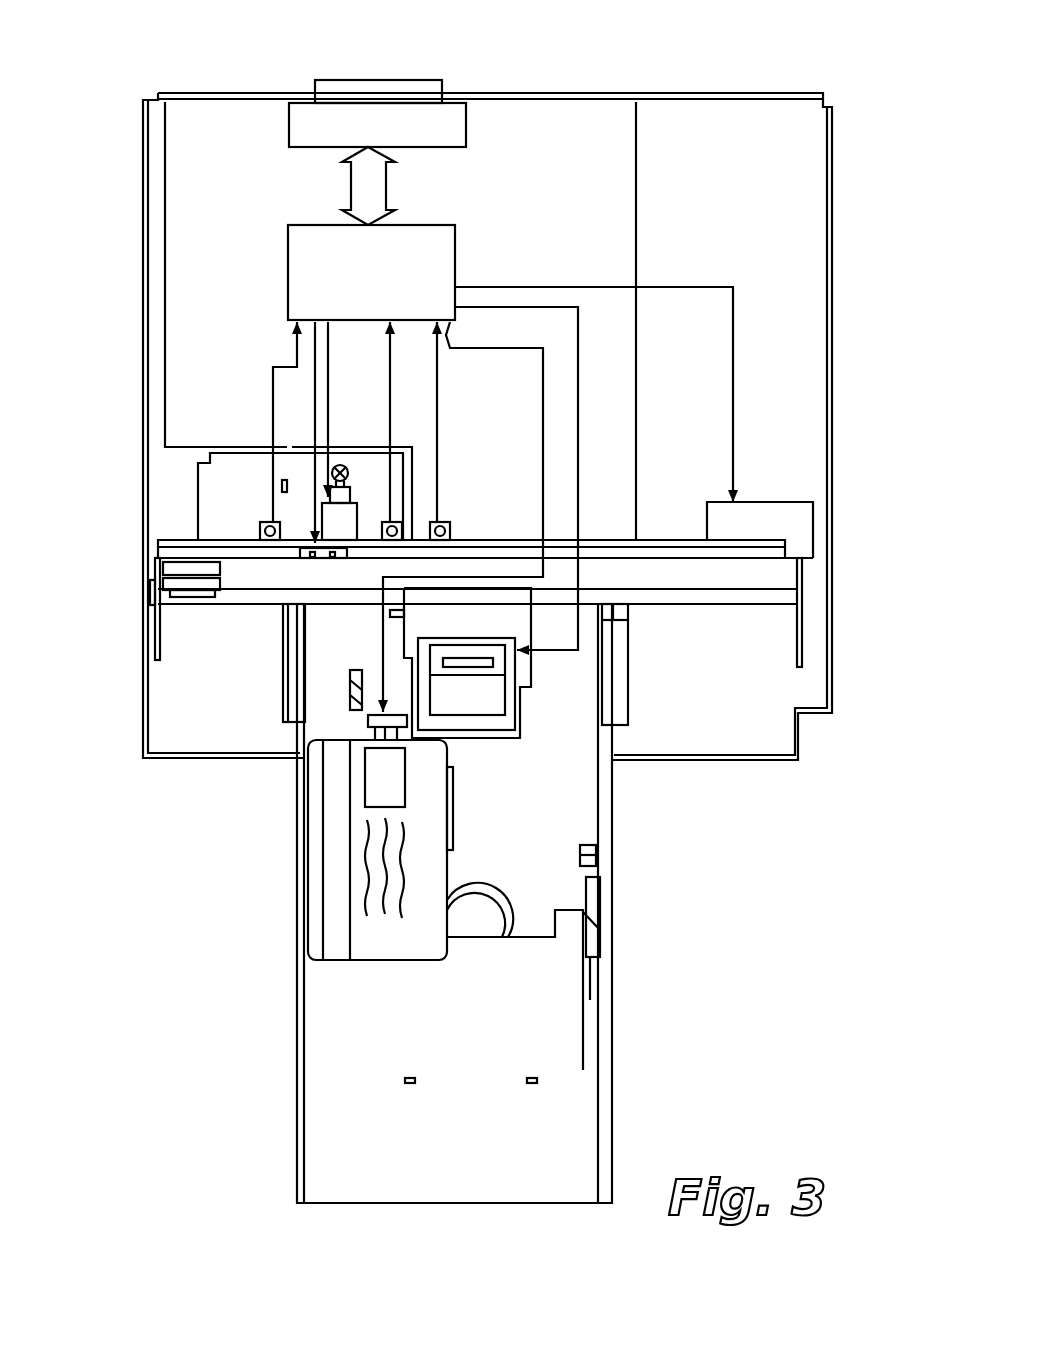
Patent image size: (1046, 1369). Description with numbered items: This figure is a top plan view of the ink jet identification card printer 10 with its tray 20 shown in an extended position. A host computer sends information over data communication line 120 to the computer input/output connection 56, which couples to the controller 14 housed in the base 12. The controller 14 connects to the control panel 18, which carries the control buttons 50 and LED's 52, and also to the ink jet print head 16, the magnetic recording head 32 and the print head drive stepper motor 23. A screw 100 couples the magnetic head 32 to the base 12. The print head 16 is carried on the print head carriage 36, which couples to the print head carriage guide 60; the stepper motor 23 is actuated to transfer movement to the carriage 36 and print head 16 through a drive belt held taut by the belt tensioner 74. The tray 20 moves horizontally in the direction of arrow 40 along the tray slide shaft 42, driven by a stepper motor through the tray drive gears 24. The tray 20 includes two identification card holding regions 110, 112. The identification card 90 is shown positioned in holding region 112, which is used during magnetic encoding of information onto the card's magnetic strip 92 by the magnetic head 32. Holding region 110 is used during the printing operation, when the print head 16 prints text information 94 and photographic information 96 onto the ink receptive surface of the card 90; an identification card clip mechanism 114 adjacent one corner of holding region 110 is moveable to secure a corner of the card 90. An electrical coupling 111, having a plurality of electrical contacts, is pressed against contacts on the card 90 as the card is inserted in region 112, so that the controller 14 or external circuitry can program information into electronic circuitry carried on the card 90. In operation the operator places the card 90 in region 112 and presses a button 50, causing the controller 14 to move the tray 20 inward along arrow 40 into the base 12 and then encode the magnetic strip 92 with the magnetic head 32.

The ink jet identification card printer 10 is at (71, 160).
The base 12 is at (833, 162).
The controller 14 is at (455, 268).
The ink jet print head 16 is at (477, 713).
The control panel 18 is at (228, 532).
The tray 20 is at (503, 903).
The print head drive stepper motor 23 is at (793, 522).
The tray drive gears 24 is at (283, 668).
The magnetic recording head 32 is at (343, 520).
The print head carriage 36 is at (481, 621).
The arrow 40 is at (772, 880).
The tray slide shaft 42 is at (612, 985).
The control buttons 50 is at (267, 522).
The LED's 52 is at (332, 558).
The computer input/output connection 56 is at (425, 92).
The print head carriage guide 60 is at (770, 579).
The belt tensioner 74 is at (190, 592).
The identification card 90 is at (389, 850).
The magnetic strip 92 is at (333, 825).
The printed or text information 94 is at (358, 902).
The photographic information 96 is at (387, 779).
The screw 100 is at (343, 465).
The identification card holding region 110 is at (452, 1060).
The electrical coupling 111 is at (368, 722).
The identification card holding region 112 is at (453, 795).
The identification card clip mechanism 114 is at (612, 905).
The data communication line 120 is at (373, 30).